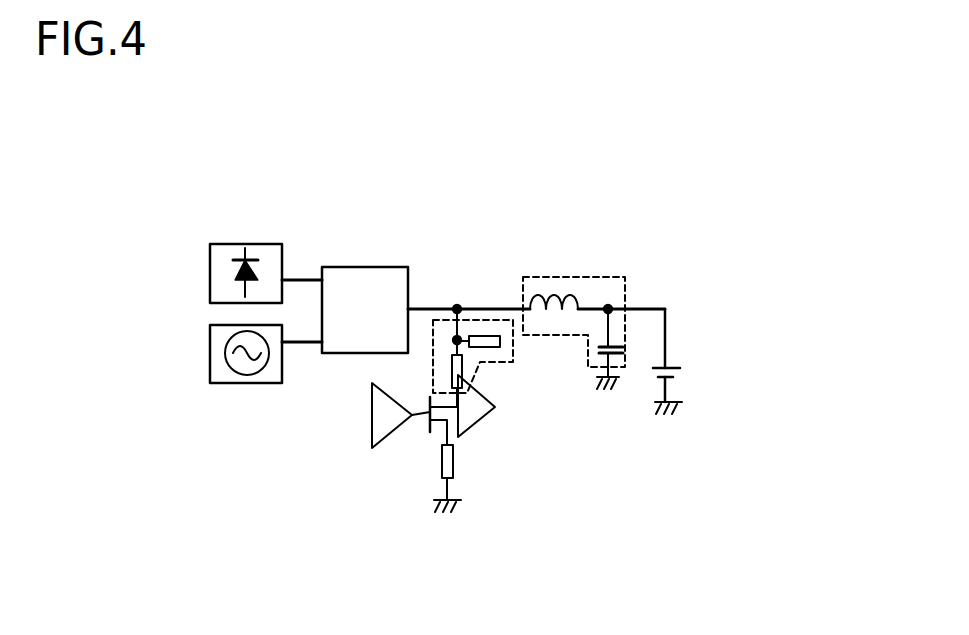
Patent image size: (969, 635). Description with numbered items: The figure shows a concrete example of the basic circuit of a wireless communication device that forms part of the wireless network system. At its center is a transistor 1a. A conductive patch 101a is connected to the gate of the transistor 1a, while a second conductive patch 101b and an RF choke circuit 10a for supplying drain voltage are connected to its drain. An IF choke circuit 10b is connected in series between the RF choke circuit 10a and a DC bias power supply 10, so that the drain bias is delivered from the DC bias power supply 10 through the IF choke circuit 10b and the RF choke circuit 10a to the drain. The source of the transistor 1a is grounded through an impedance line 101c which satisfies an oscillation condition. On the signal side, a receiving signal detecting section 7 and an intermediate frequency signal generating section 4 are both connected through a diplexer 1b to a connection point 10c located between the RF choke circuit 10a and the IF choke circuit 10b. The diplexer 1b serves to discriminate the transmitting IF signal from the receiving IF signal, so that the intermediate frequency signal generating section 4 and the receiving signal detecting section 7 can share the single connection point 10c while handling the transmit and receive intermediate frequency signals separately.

The receiving signal detecting section 7 is at (195, 238).
The intermediate frequency signal generating section 4 is at (202, 403).
The diplexer 1b is at (411, 263).
The connection point 10c is at (514, 261).
The IF choke circuit 10b is at (663, 266).
The DC bias power supply 10 is at (750, 321).
The RF choke circuit 10a is at (547, 391).
The conductive patch 101a is at (319, 449).
The transistor 1a is at (390, 480).
The conductive patch 101b is at (548, 454).
The impedance line 101c is at (514, 520).